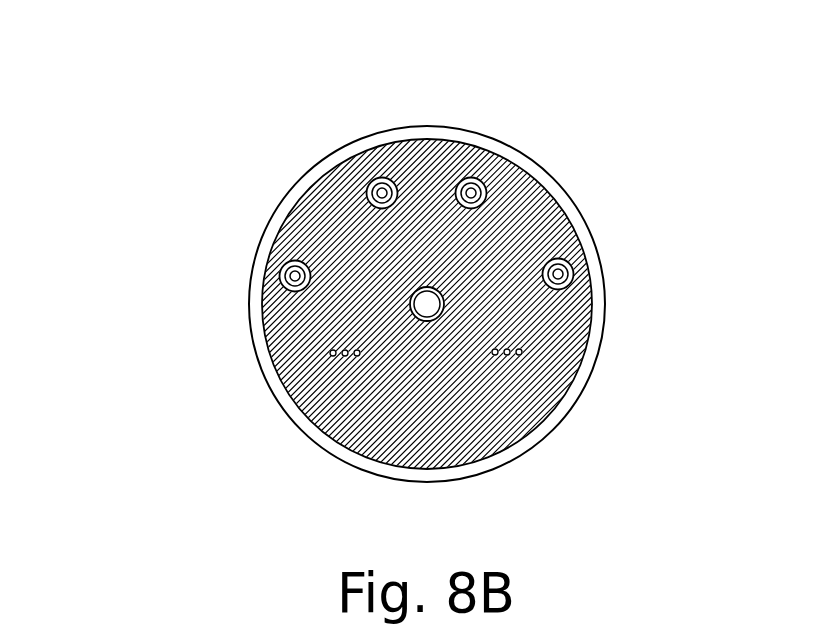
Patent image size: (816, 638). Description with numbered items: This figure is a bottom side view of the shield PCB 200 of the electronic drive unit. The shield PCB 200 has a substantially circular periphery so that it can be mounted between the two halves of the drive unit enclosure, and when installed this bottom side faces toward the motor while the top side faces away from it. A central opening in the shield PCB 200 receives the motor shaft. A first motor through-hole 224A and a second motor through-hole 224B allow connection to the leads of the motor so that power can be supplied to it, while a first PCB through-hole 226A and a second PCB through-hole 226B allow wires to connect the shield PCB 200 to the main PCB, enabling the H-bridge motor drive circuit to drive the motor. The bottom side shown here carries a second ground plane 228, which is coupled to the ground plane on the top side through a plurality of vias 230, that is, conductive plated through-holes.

The shield PCB 200 is at (182, 327).
The first motor through-hole 224A is at (291, 268).
The second motor through-hole 224B is at (575, 276).
The first PCB through-hole 226A is at (383, 187).
The second PCB through-hole 226B is at (471, 192).
The second ground plane 228 is at (447, 425).
The vias 230 is at (347, 367).